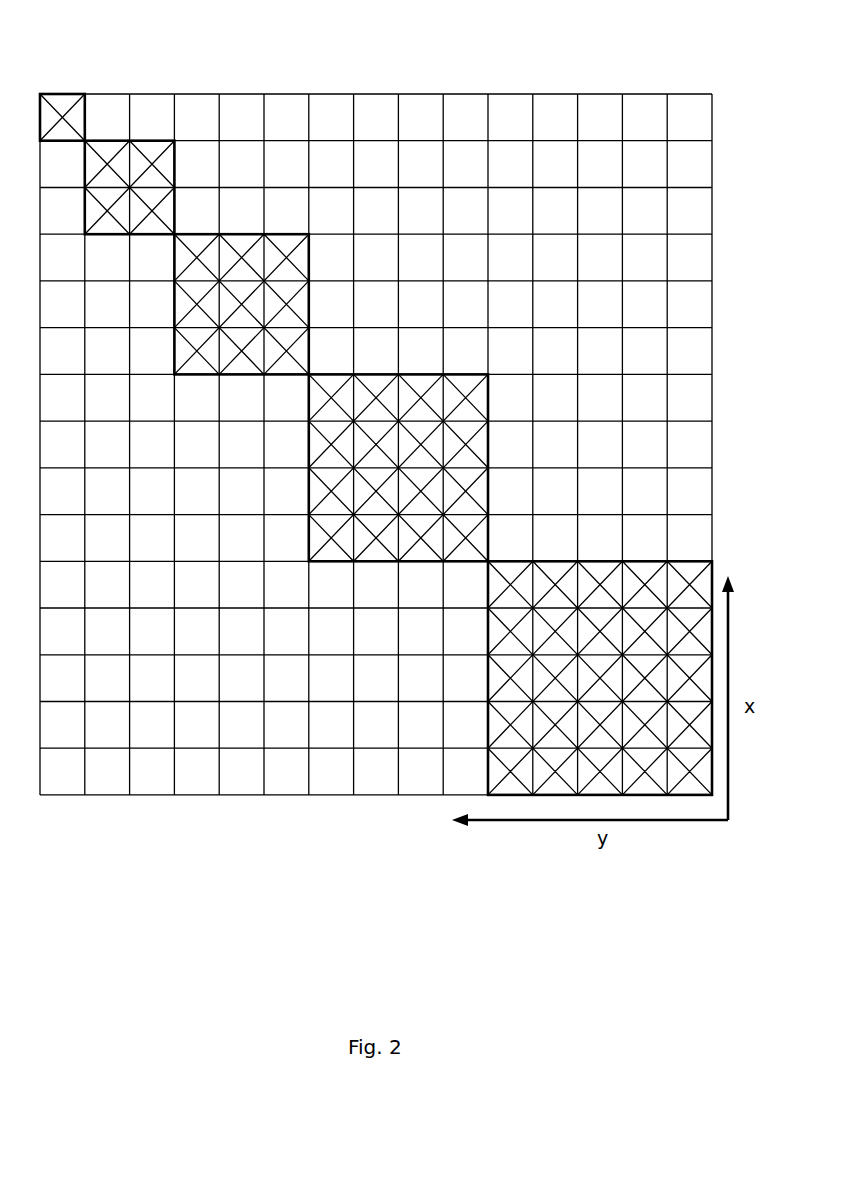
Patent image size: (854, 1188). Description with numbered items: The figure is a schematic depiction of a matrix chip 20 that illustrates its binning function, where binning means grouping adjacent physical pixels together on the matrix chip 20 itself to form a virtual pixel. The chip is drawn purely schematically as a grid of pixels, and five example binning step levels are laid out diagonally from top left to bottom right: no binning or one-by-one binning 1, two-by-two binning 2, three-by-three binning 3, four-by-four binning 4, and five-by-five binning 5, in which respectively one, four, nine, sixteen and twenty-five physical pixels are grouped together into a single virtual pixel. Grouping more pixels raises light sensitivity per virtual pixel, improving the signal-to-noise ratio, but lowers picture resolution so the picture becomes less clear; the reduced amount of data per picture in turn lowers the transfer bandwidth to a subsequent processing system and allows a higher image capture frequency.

The matrix chip 20 is at (427, 94).
The 1×1 binning 1 is at (65, 110).
The 2×2 binning 2 is at (158, 150).
The 3×3 binning 3 is at (283, 258).
The 4×4 binning 4 is at (455, 390).
The 5×5 binning 5 is at (550, 582).